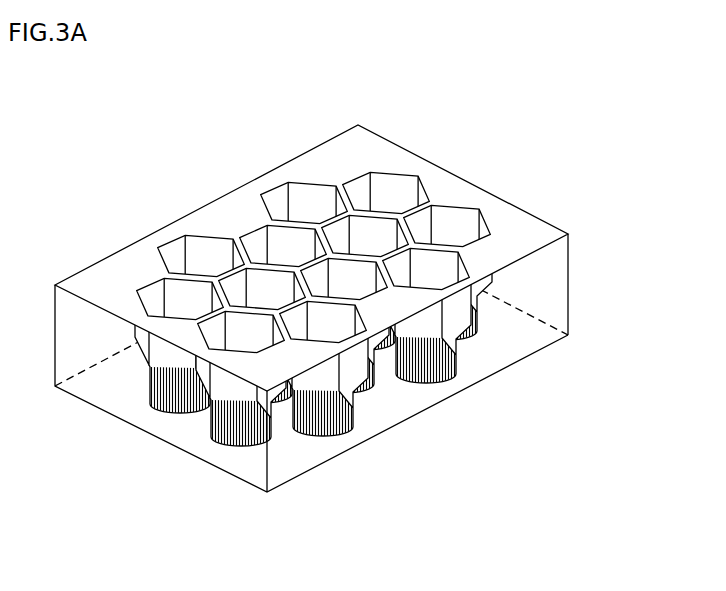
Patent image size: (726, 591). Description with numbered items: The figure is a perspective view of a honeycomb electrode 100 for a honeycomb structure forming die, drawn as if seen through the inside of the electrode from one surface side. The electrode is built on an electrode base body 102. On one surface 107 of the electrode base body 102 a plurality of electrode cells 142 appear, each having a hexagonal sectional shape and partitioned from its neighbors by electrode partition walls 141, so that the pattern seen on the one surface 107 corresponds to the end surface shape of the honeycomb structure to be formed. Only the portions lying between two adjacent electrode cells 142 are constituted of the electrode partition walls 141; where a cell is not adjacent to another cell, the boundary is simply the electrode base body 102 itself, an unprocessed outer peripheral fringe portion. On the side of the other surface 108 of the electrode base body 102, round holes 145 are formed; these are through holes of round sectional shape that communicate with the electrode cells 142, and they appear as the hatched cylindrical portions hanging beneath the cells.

The honeycomb electrode 100 is at (347, 318).
The electrode base body 102 is at (564, 272).
The one surface 107 is at (538, 235).
The another surface 108 is at (498, 352).
The electrode partition walls 141 is at (328, 221).
The electrode cells 142 is at (210, 257).
The round holes 145 is at (248, 440).